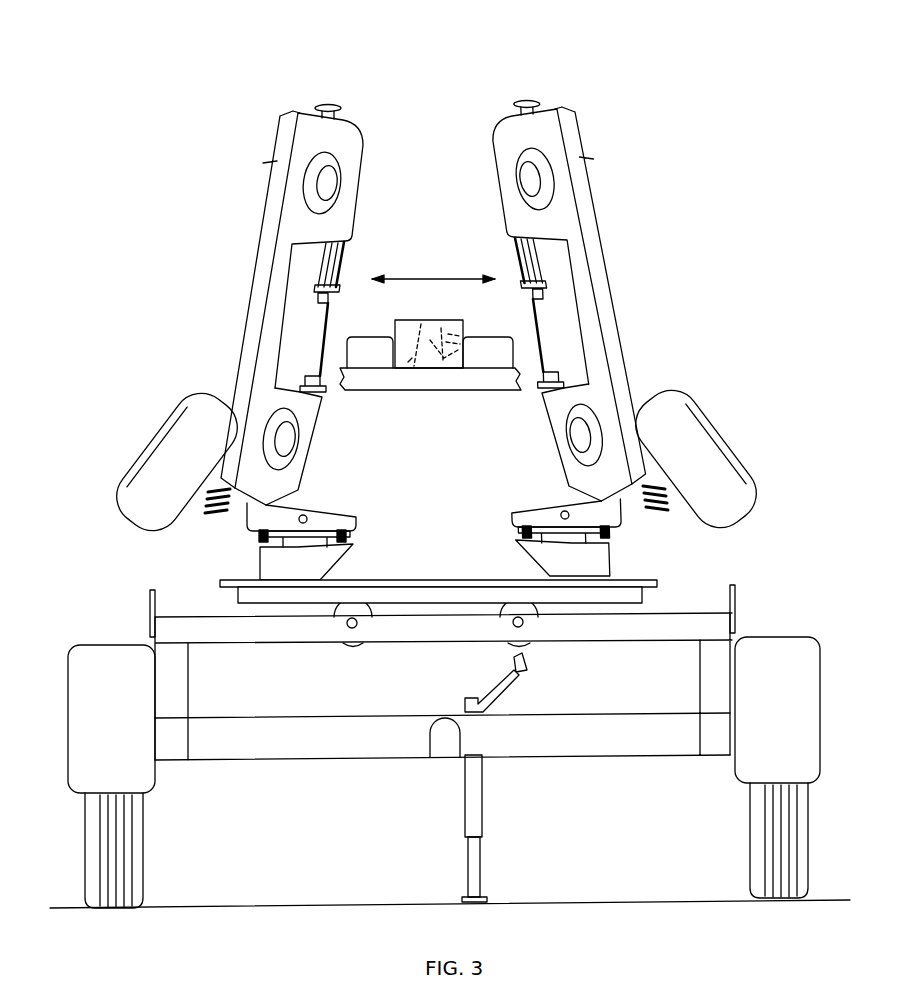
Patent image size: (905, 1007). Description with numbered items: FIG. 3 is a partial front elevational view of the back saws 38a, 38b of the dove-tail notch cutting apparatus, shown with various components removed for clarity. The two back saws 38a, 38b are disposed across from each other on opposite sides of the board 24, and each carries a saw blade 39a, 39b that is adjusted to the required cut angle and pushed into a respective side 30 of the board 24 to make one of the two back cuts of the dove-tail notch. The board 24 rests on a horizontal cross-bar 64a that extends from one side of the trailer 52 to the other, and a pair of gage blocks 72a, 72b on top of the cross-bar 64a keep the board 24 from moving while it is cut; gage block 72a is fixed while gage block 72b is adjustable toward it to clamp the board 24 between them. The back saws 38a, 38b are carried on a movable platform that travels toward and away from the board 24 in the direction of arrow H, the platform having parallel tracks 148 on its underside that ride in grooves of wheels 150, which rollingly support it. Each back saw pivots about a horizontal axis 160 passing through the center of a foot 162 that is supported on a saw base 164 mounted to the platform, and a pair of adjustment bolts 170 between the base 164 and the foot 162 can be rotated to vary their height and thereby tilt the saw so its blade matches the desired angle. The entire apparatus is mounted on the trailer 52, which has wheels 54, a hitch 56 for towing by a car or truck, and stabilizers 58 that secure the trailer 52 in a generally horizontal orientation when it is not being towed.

The back saw 38a is at (300, 128).
The back saw 38b is at (563, 137).
The saw blade 39a is at (327, 347).
The saw blade 39b is at (542, 329).
The side of board 30 is at (428, 320).
The board 24 is at (412, 358).
The cross-bar 64a is at (457, 377).
The gage block 72a is at (373, 345).
The gage block 72b is at (493, 345).
The arrow H is at (435, 264).
The horizontal axis 160 is at (307, 516).
The saw foot 162 is at (337, 522).
The saw base 164 is at (270, 562).
The adjustment bolts 170 is at (259, 537).
The parallel tracks 148 is at (410, 595).
The wheels 150 is at (345, 650).
The trailer 52 is at (337, 732).
The wheels 54 is at (140, 843).
The hitch 56 is at (437, 713).
The stabilizers 58 is at (483, 807).